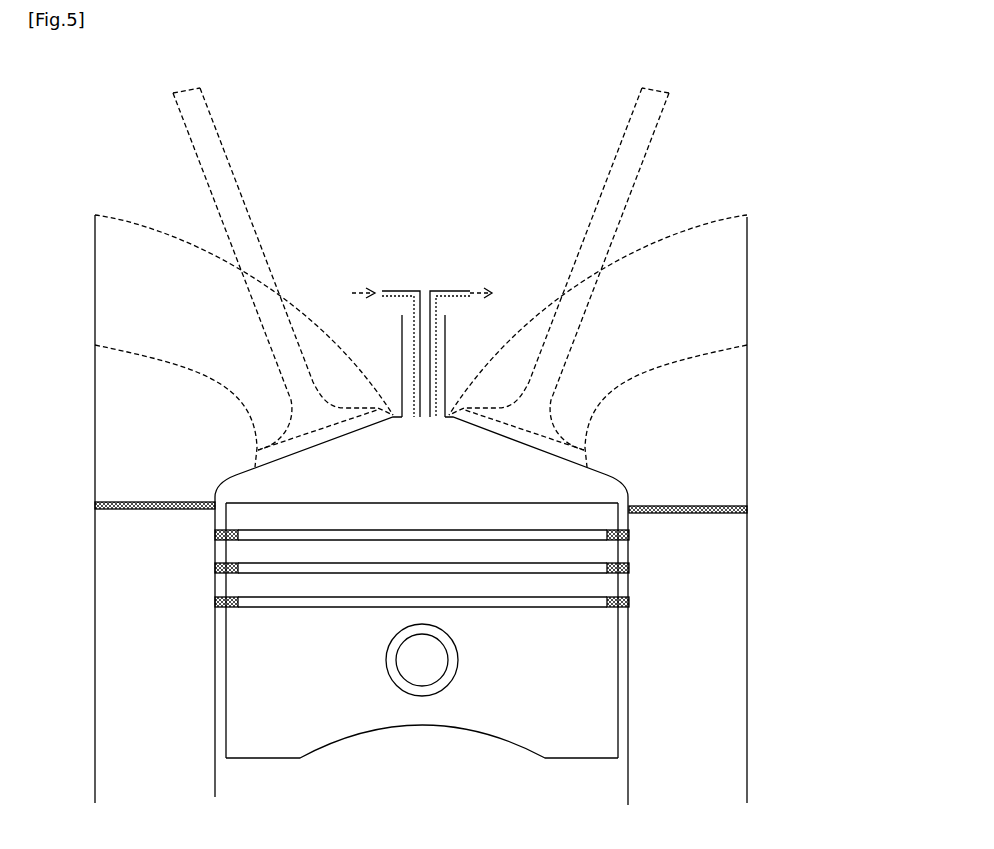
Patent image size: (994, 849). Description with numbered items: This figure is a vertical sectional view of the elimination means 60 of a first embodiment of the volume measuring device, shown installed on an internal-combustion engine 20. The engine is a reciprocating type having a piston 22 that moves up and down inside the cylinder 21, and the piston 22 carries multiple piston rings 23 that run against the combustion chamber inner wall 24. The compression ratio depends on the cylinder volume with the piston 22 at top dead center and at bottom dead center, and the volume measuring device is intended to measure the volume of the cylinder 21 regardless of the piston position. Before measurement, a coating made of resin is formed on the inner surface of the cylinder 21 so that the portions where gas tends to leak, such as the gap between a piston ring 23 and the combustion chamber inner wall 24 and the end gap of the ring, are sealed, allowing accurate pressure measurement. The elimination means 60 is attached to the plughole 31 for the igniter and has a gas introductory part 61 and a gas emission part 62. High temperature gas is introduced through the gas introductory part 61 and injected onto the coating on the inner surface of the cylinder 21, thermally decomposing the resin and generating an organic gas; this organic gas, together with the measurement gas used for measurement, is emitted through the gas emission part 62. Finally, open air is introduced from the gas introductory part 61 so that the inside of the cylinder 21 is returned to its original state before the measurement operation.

The internal-combustion engine 20 is at (773, 180).
The cylinder 21 is at (628, 487).
The piston 22 is at (572, 731).
The piston rings 23 is at (214, 533).
The combustion chamber inner wall 24 is at (628, 645).
The plughole 31 is at (409, 330).
The elimination means 60 is at (432, 297).
The gas introductory part 61 is at (404, 291).
The gas emission part 62 is at (455, 291).